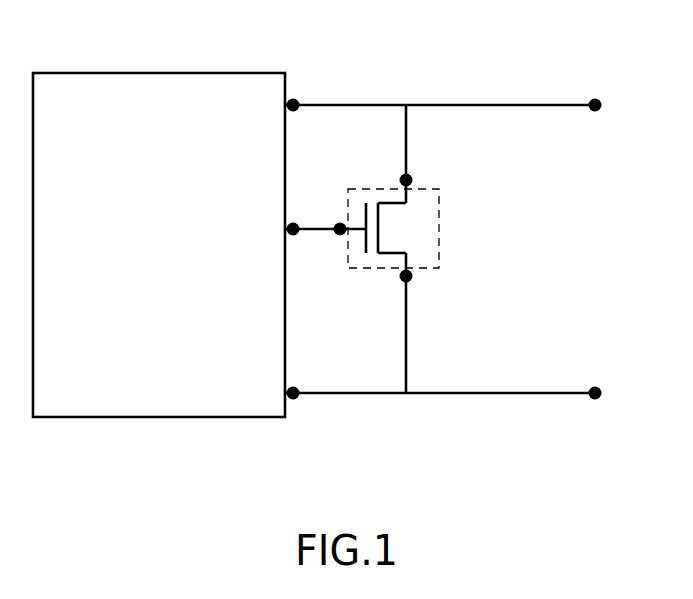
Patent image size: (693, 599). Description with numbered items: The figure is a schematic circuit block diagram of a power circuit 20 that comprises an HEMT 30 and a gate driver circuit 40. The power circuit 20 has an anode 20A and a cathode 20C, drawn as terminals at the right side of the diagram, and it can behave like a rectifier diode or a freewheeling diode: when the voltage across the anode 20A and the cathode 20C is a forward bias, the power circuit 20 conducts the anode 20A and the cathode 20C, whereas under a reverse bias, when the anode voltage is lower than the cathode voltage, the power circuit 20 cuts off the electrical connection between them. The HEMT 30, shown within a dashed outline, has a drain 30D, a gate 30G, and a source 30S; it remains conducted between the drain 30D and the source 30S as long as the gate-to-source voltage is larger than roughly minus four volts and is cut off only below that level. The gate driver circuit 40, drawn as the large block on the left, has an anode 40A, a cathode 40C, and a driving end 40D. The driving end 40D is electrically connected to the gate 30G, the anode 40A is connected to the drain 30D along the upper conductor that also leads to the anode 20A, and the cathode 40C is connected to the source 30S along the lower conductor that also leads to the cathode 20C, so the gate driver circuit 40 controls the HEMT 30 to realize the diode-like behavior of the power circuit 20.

The power circuit 20 is at (627, 41).
The anode 20A is at (597, 100).
The cathode 20C is at (597, 388).
The HEMT 30 is at (439, 218).
The drain 30D is at (433, 172).
The gate 30G is at (333, 236).
The source 30S is at (432, 284).
The gate driver circuit 40 is at (173, 253).
The anode 40A is at (294, 100).
The cathode 40C is at (294, 388).
The driving end 40D is at (300, 218).